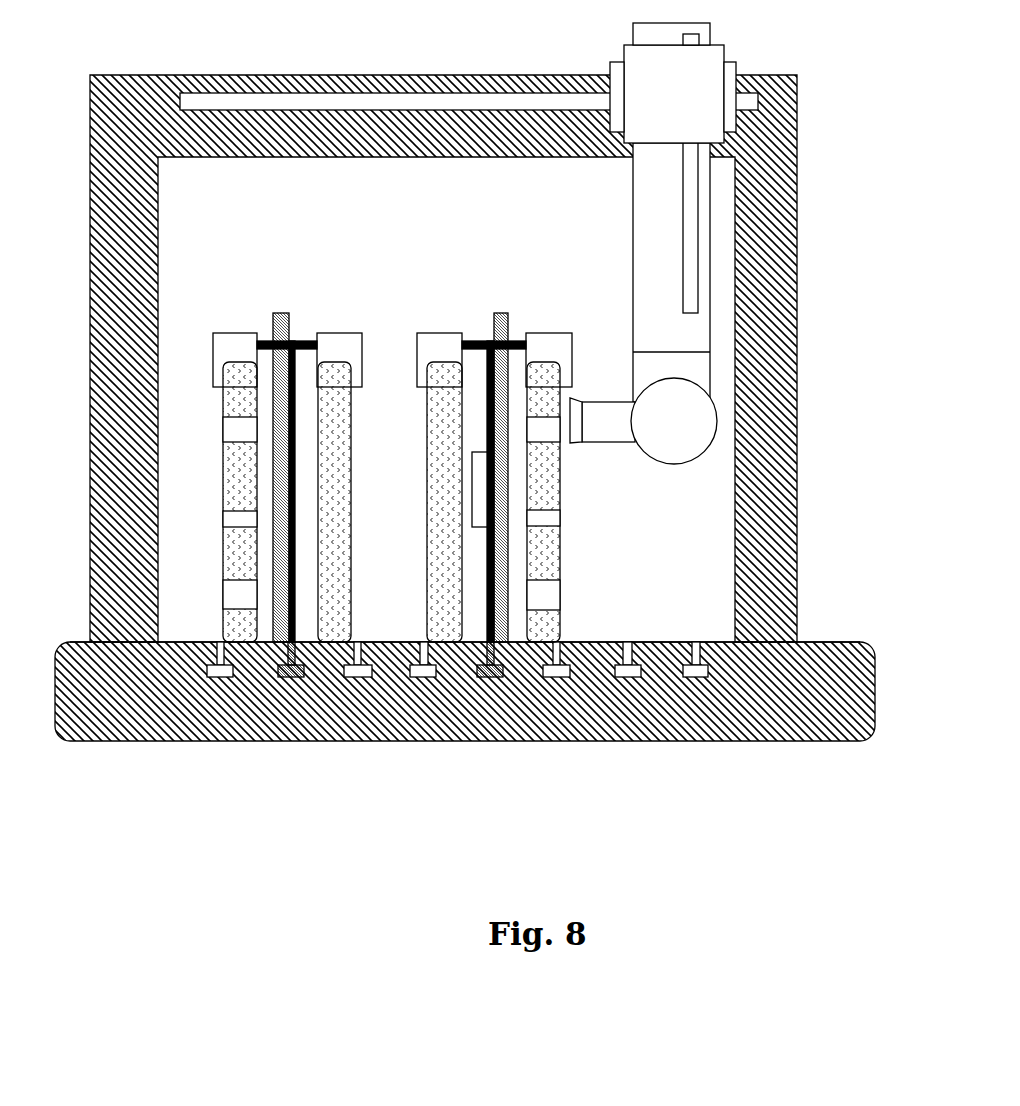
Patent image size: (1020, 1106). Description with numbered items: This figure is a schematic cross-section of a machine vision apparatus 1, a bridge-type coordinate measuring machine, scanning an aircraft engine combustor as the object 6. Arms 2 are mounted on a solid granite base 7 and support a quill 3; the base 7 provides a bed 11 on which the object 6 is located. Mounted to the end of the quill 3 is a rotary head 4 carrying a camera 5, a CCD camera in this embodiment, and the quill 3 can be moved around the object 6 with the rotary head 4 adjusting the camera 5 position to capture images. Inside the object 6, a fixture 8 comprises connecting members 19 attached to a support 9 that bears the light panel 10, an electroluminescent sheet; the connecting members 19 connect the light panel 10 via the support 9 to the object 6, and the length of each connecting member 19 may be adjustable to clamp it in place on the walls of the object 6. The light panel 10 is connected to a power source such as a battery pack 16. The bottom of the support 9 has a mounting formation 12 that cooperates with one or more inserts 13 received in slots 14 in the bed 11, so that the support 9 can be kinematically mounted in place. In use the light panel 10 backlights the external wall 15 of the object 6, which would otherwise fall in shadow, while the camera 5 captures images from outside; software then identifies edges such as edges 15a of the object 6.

The machine vision apparatus 1 is at (465, 440).
The arms 2 is at (805, 163).
The quill 3 is at (723, 238).
The rotary head 4 is at (725, 428).
The camera 5 is at (592, 450).
The object 6 is at (536, 434).
The base 7 is at (471, 700).
The fixture 8 is at (197, 439).
The support 9 is at (304, 484).
The light panel 10 is at (260, 522).
The bed 11 is at (674, 637).
The mounting formation 12 is at (277, 657).
The insert 13 is at (301, 690).
The slots 14 is at (434, 690).
The external wall 15 is at (130, 493).
The edges 15a is at (223, 434).
The battery pack 16 is at (473, 437).
The connecting members 19 is at (236, 319).